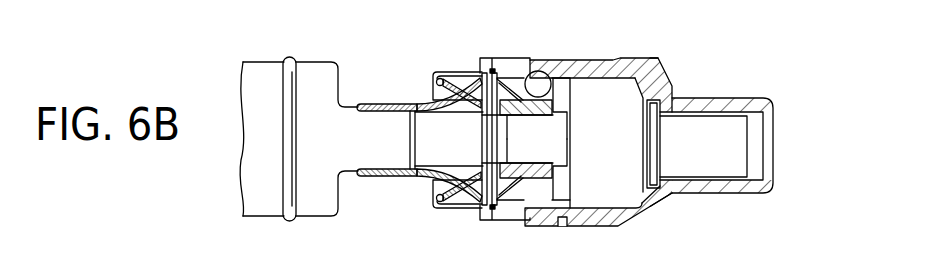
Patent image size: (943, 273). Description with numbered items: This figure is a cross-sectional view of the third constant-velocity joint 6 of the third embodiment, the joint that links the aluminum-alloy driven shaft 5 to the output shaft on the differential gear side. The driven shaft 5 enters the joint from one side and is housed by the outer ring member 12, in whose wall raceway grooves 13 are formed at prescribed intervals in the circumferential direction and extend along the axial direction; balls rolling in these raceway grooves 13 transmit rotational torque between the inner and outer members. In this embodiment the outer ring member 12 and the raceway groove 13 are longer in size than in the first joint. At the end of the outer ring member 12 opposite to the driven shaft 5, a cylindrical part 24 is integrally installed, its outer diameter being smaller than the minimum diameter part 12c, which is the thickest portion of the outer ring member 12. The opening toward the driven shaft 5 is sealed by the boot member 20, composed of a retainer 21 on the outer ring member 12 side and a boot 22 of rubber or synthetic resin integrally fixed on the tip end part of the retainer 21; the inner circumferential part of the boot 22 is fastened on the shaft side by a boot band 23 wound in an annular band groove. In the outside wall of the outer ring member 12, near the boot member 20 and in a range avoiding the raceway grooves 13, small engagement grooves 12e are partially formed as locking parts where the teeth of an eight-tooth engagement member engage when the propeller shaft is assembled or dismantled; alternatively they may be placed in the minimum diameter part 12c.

The driven shaft 5 is at (263, 70).
The third constant-velocity joint 6 is at (565, 136).
The outer ring member 12 is at (568, 58).
The minimum diameter part 12c is at (644, 58).
The engagement groove 12e is at (567, 227).
The raceway groove 13 is at (512, 72).
The boot member 20 is at (419, 104).
The retainer 21 is at (457, 122).
The boot 22 is at (422, 104).
The boot band 23 is at (392, 104).
The cylindrical part 24 is at (723, 97).